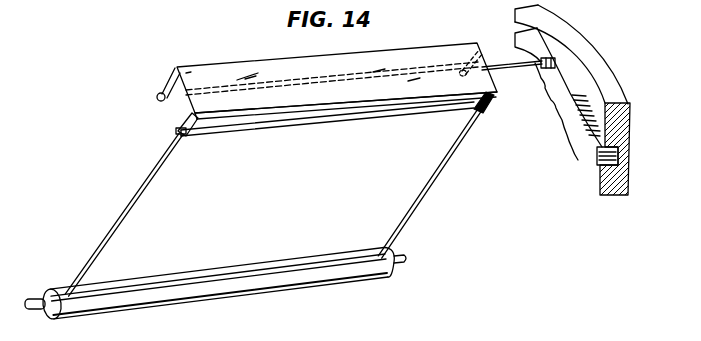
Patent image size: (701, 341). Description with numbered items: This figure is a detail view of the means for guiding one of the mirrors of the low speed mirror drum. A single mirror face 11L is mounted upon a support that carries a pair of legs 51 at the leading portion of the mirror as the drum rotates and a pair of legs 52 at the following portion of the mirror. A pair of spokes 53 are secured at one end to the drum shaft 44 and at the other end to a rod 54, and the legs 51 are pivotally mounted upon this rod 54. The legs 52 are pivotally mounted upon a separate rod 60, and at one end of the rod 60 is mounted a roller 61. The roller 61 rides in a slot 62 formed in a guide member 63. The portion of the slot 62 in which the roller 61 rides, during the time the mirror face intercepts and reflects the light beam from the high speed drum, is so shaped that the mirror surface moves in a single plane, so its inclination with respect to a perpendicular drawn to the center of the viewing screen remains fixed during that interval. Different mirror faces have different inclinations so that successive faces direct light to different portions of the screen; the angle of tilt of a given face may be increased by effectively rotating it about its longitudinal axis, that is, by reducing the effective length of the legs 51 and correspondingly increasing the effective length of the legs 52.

The mirror face 11L is at (256, 62).
The legs 52 is at (170, 82).
The rod 54 is at (347, 118).
The legs 51 is at (180, 120).
The spokes 53 is at (136, 198).
The shaft 44 is at (42, 313).
The rod 60 is at (525, 67).
The roller 61 is at (550, 66).
The slot 62 is at (597, 143).
The guide member 63 is at (629, 105).